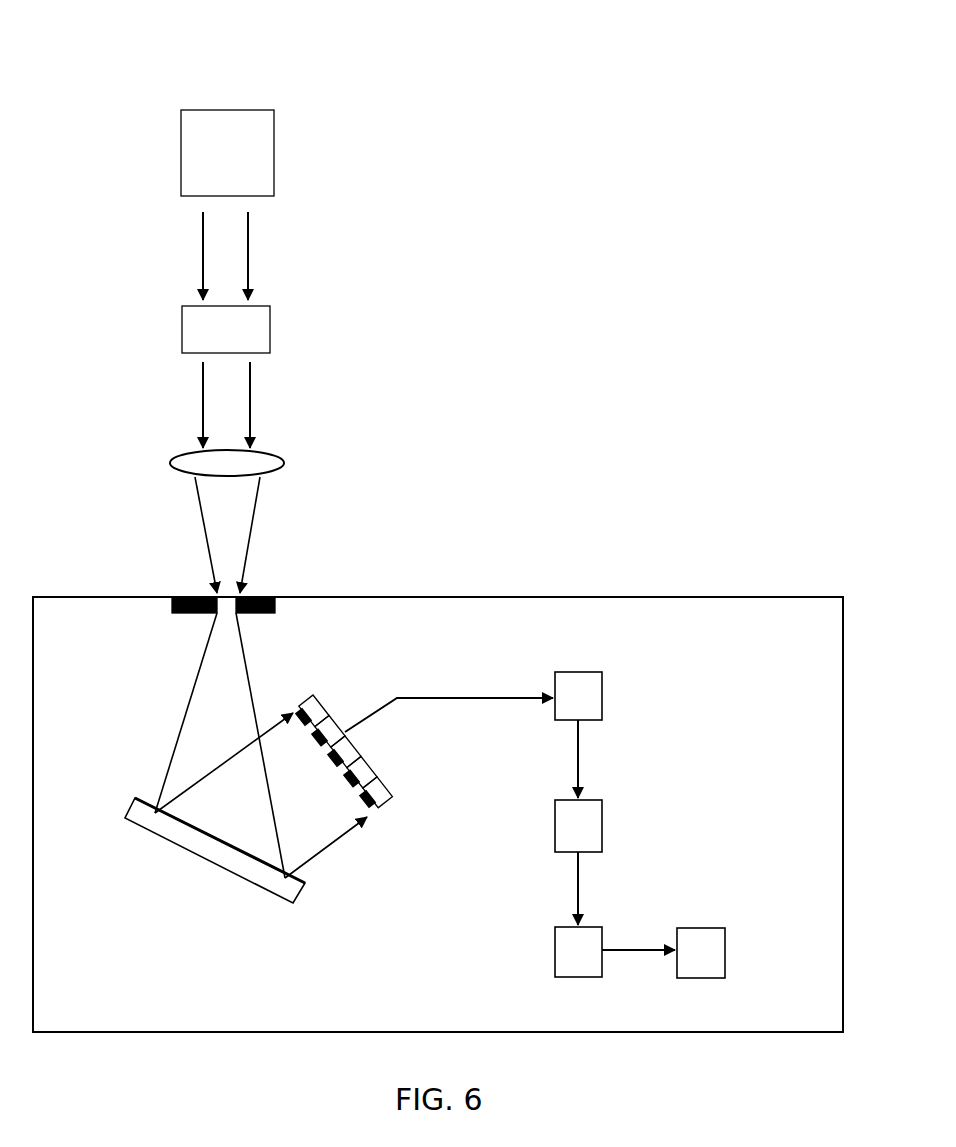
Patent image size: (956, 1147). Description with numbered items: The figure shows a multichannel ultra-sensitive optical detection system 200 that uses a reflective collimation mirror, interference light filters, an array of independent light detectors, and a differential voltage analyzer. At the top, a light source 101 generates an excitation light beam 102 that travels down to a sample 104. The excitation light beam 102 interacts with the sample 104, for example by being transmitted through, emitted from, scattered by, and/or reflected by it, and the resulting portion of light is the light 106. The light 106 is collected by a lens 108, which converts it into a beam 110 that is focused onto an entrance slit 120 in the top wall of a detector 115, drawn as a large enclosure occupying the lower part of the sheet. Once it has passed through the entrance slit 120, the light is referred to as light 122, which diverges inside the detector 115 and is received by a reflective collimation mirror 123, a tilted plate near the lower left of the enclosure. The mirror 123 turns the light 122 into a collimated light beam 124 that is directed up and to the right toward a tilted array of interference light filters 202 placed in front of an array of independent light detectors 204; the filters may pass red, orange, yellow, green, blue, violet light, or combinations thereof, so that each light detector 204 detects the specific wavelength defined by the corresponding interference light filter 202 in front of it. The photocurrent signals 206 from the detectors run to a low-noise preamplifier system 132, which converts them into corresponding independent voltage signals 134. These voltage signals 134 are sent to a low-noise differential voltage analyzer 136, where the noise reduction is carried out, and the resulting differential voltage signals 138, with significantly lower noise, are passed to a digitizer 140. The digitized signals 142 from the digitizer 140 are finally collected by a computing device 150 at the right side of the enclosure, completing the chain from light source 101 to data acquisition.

The multichannel ultra-sensitive optical detection system 200 is at (638, 31).
The light source 101 is at (230, 170).
The excitation light beam 102 is at (233, 258).
The sample 104 is at (240, 335).
The light 106 is at (232, 405).
The lens 108 is at (283, 462).
The beam 110 is at (243, 537).
The detector 115 is at (572, 596).
The entrance slit 120 is at (177, 593).
The light 122 is at (207, 725).
The reflective collimation mirror 123 is at (178, 848).
The collimated light beam 124 is at (315, 830).
The interference light filters 202 is at (376, 783).
The light detectors 204 is at (377, 810).
The photocurrent signals 206 is at (435, 698).
The low-noise preamplifier system 132 is at (592, 693).
The voltage signals 134 is at (580, 763).
The low-noise differential voltage analyzer 136 is at (592, 829).
The differential voltage signals 138 is at (572, 880).
The digitizer 140 is at (565, 948).
The digitized signals 142 is at (622, 948).
The computing device 150 is at (715, 952).